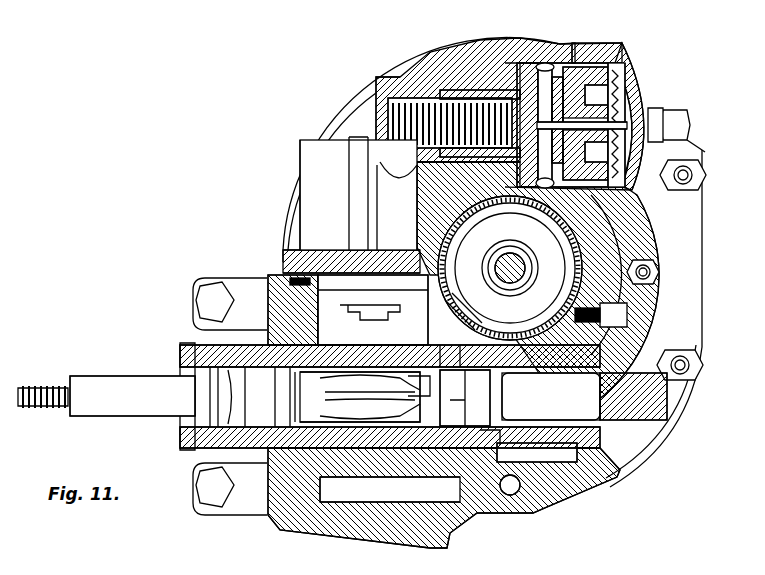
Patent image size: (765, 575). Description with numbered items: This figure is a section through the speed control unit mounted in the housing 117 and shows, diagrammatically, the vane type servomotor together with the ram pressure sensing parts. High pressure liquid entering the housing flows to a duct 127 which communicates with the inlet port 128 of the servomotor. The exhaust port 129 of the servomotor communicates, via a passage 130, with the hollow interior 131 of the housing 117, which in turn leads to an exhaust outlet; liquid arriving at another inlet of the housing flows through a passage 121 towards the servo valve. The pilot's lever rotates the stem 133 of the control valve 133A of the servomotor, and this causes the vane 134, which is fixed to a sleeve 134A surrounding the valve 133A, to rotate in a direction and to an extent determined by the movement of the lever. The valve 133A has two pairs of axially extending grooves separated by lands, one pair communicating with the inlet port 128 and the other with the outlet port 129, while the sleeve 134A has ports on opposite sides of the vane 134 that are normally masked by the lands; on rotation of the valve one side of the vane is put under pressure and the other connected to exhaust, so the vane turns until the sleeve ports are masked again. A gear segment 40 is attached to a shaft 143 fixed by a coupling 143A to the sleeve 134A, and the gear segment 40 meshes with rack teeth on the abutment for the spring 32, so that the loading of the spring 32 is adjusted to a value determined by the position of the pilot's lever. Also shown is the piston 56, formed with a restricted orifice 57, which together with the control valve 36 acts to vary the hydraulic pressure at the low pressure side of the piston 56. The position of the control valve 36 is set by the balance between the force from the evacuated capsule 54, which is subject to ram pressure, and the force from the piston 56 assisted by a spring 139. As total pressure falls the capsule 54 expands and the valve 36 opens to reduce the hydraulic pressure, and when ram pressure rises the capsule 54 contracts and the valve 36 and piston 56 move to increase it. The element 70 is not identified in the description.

The housing 117 is at (313, 156).
The spring 139 is at (435, 100).
The piston 56 is at (470, 90).
The restricted orifice 57 is at (545, 62).
The control valve 36 is at (560, 66).
The evacuated capsule 54 is at (648, 88).
The passage 121 is at (440, 200).
The hollow interior 131 is at (530, 225).
The spring 32 is at (492, 256).
The pin 70 is at (516, 262).
The passage 130 is at (479, 311).
The vane 134 is at (388, 339).
The stem 133 is at (120, 388).
The inlet port 128 is at (275, 428).
The control valve 133A is at (347, 397).
The sleeve 134A is at (434, 383).
The coupling 143A is at (478, 395).
The gear segment 40 is at (582, 332).
The shaft 143 is at (566, 406).
The exhaust port 129 is at (500, 433).
The duct 127 is at (516, 494).